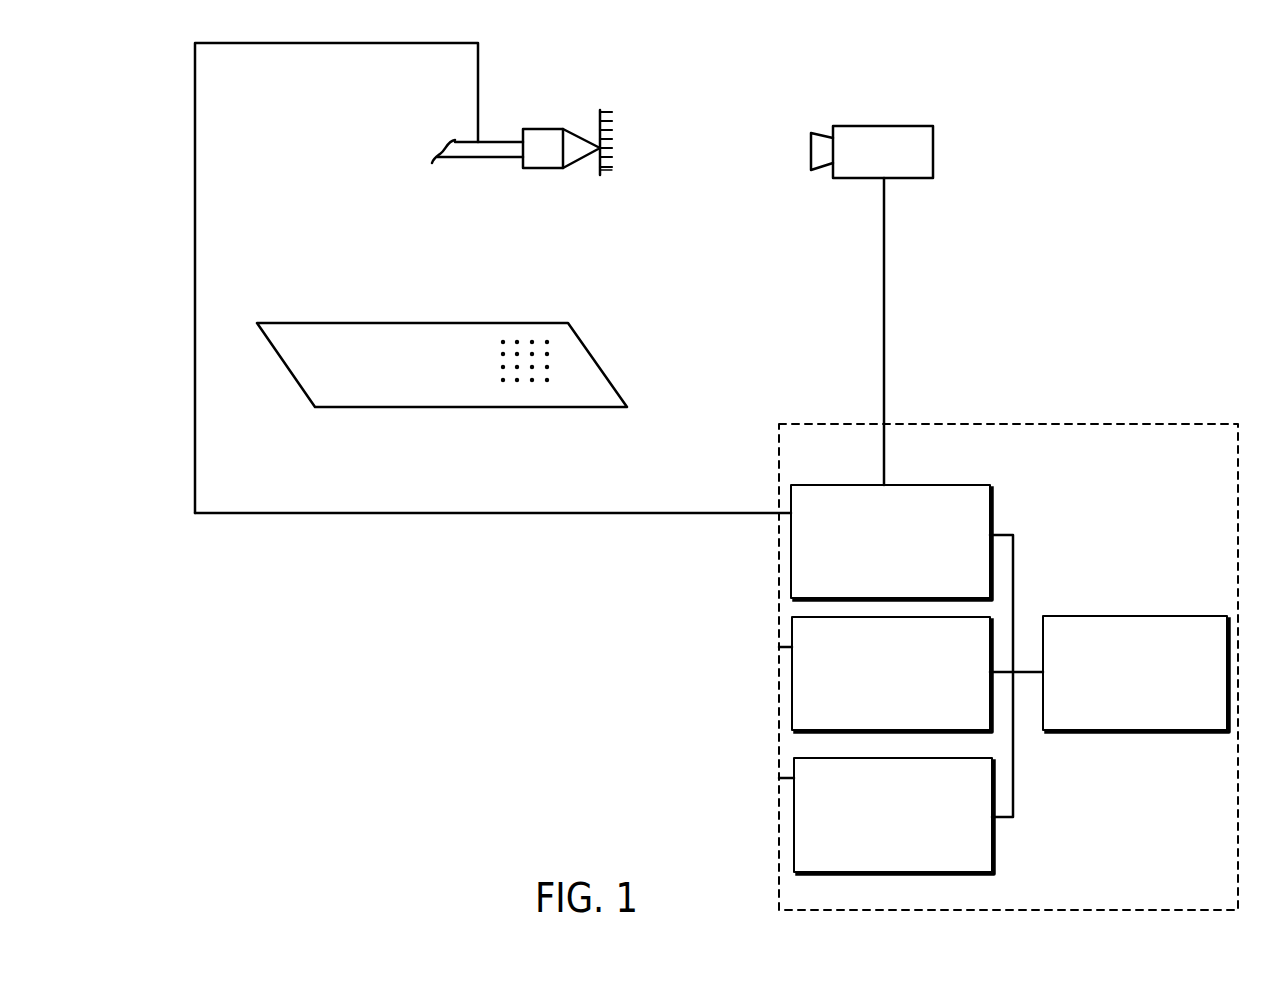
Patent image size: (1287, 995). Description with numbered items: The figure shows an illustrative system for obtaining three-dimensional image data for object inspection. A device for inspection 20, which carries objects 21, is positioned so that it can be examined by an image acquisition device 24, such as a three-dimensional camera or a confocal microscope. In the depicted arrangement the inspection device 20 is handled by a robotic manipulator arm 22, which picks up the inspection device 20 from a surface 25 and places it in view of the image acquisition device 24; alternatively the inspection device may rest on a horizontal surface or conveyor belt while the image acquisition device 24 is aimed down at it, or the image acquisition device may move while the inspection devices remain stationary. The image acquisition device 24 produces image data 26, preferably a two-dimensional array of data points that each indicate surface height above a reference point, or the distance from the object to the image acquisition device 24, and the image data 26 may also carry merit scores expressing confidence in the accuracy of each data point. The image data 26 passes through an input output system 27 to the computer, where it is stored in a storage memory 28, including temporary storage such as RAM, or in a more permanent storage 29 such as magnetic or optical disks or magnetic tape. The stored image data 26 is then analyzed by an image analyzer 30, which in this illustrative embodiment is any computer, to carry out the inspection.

The device for inspection 20 is at (598, 172).
The objects 21 is at (603, 176).
The robotic manipulator arm 22 is at (547, 128).
The image acquisition device 24 is at (905, 180).
The surface 25 is at (391, 408).
The image data 26 is at (883, 392).
The input output system 27 is at (972, 486).
The storage memory 28 is at (792, 706).
The permanent storage 29 is at (794, 847).
The image analyzer 30 is at (1228, 660).